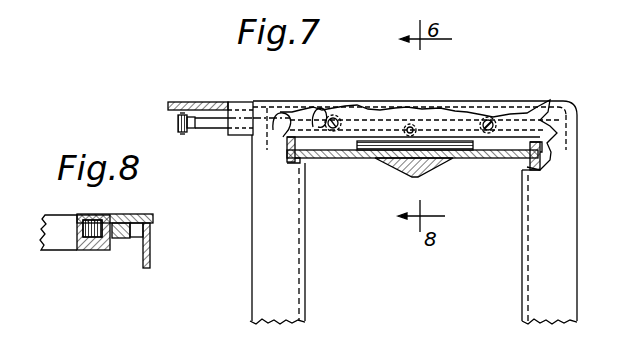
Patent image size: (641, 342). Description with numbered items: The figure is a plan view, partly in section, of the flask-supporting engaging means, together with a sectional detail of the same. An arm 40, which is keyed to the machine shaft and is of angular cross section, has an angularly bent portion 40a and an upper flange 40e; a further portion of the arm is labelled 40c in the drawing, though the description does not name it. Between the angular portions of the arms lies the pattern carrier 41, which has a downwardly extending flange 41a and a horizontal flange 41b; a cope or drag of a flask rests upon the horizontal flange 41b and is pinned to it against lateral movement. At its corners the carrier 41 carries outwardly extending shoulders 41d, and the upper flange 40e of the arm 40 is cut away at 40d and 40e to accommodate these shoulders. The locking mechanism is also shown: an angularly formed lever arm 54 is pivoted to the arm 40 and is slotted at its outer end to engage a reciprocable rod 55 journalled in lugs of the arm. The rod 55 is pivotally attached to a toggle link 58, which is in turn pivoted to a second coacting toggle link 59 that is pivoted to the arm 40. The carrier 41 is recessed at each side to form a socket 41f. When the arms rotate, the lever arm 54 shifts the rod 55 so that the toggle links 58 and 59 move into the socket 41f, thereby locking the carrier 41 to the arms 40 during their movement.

In FIG. 7, the arm 40 is at (170, 105).
In FIG. 7, the angularly bent portion 40a is at (245, 101).
In FIG. 8, the angularly bent portion 40a is at (150, 249).
In FIG. 7, the bracket lip 40c is at (358, 118).
In FIG. 8, the bracket lip 40c is at (153, 222).
In FIG. 7, the cut-away portion 40d is at (550, 101).
In FIG. 7, the upper flange 40e is at (305, 122).
In FIG. 7, the pattern carrier 41 is at (580, 270).
In FIG. 7, the downwardly extending flange 41a is at (486, 158).
In FIG. 8, the downwardly extending flange 41a is at (72, 222).
In FIG. 7, the horizontal flange 41b is at (290, 305).
In FIG. 8, the horizontal flange 41b is at (115, 214).
In FIG. 7, the shoulder 41d is at (540, 151).
In FIG. 7, the socket 41f is at (398, 162).
In FIG. 8, the socket 41f is at (78, 236).
In FIG. 7, the angularly formed arm 54 is at (204, 130).
In FIG. 7, the reciprocable rod 55 is at (218, 118).
In FIG. 7, the toggle link 58 is at (375, 126).
In FIG. 7, the second coacting toggle link 59 is at (457, 126).
In FIG. 8, the second coacting toggle link 59 is at (121, 240).